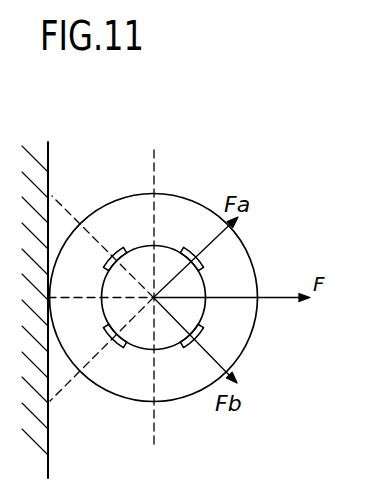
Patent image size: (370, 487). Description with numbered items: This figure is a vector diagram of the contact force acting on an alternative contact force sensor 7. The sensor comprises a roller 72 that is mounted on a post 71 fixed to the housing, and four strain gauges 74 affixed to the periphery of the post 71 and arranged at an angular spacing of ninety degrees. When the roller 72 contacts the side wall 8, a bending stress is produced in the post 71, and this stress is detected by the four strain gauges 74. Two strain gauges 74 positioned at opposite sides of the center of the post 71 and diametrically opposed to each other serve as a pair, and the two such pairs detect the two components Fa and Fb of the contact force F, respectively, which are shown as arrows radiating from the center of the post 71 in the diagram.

The contact force sensor 7 is at (293, 118).
The side wall 8 is at (52, 148).
The post 71 is at (141, 257).
The roller 72 is at (251, 256).
The strain gauges 74 is at (120, 245).